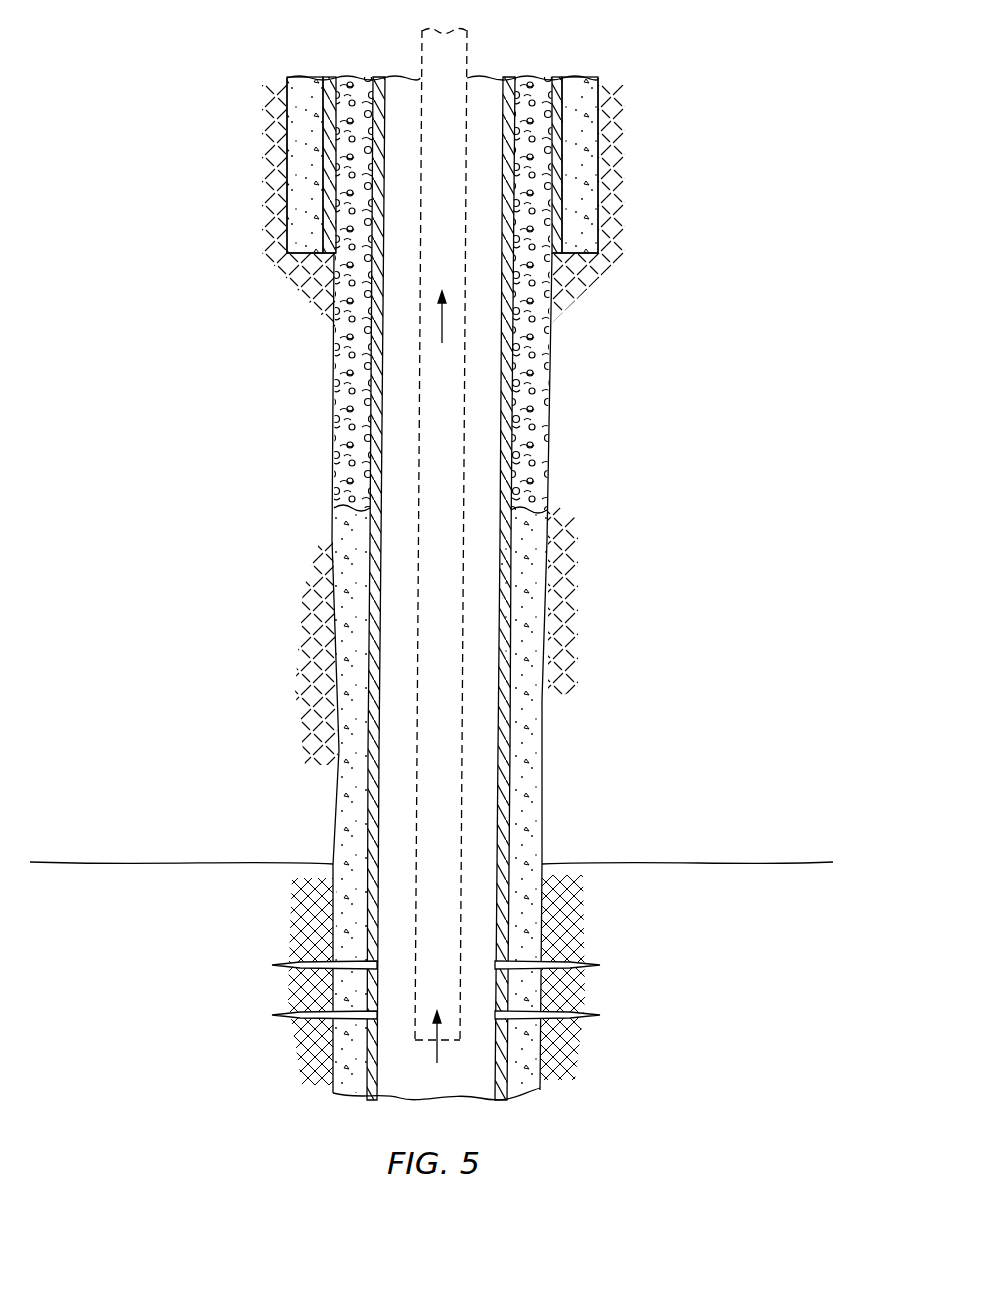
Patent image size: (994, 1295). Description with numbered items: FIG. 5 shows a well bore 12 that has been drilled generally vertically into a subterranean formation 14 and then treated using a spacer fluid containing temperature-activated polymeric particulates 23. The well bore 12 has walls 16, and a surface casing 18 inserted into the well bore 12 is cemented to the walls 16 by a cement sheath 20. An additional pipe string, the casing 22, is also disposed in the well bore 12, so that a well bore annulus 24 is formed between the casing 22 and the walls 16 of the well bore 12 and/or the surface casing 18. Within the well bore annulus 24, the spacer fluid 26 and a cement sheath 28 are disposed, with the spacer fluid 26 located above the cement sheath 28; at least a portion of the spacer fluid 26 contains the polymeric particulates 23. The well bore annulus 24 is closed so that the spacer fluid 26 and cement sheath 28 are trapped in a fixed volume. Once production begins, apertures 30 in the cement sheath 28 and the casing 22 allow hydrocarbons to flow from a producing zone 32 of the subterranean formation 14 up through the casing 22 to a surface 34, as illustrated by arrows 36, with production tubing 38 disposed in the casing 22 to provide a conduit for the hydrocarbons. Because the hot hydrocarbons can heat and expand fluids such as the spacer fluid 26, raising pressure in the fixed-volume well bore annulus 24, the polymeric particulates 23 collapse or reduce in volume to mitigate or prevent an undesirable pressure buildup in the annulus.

The well bore 12 is at (548, 548).
The subterranean formation 14 is at (317, 800).
The walls 16 is at (598, 119).
The surface casing 18 is at (563, 177).
The cement sheath 20 is at (578, 150).
The casing 22 is at (345, 367).
The polymeric particulates 23 is at (547, 357).
The well bore annulus 24 is at (550, 502).
The spacer fluid 26 is at (335, 338).
The cement sheath 28 is at (527, 763).
The apertures 30 is at (272, 1015).
The producing zone 32 is at (292, 947).
The surface 34 is at (484, 76).
The arrows 36 is at (442, 318).
The production tubing 38 is at (420, 58).